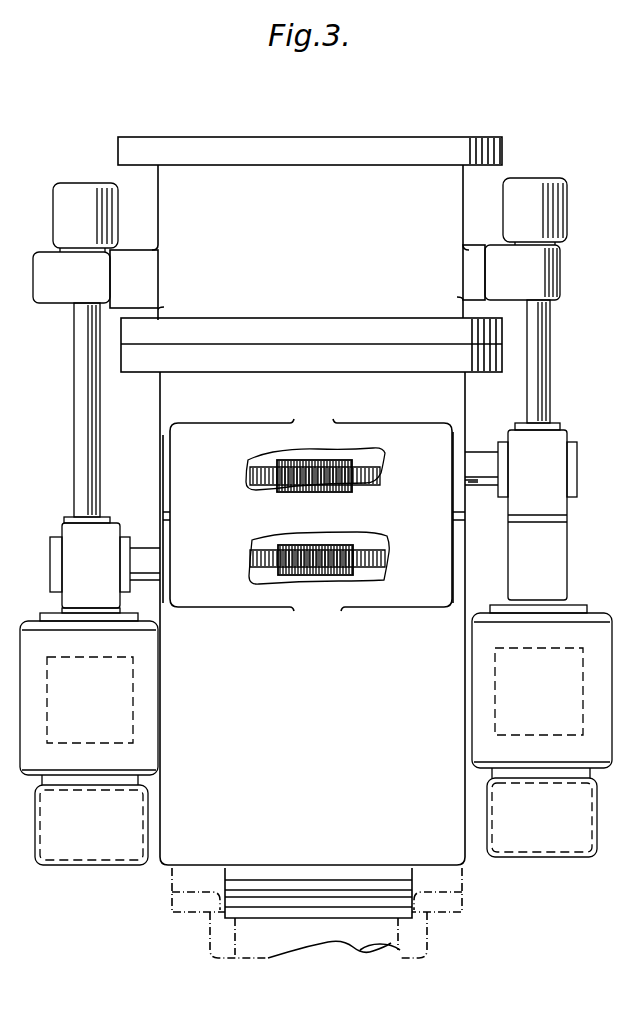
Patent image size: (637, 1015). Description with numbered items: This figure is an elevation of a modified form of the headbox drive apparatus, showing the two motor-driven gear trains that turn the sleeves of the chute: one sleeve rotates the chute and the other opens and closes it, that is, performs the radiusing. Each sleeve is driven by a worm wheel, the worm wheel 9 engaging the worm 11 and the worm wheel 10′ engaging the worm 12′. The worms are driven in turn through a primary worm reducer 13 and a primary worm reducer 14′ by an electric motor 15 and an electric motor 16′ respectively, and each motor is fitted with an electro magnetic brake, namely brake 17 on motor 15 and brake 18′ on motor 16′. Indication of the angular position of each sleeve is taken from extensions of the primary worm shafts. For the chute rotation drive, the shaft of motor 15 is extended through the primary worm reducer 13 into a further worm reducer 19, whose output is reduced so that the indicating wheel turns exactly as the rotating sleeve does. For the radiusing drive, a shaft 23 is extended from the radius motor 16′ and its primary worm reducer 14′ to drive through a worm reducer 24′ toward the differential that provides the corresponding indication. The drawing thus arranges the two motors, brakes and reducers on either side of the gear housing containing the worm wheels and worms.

The worm wheel 9 is at (378, 471).
The worm wheel 10′ is at (382, 560).
The worm 11 is at (303, 472).
The worm 12′ is at (330, 565).
The primary worm reducer 13 is at (521, 450).
The primary worm reducer 14′ is at (105, 565).
The electric motor 15 is at (542, 686).
The electric motor 16′ is at (89, 694).
The electro magnetic brake 17 is at (542, 812).
The electro magnetic brake 18′ is at (91, 820).
The worm reducer 19 is at (526, 239).
The shaft 23 is at (80, 457).
The worm reducer 24′ is at (75, 243).